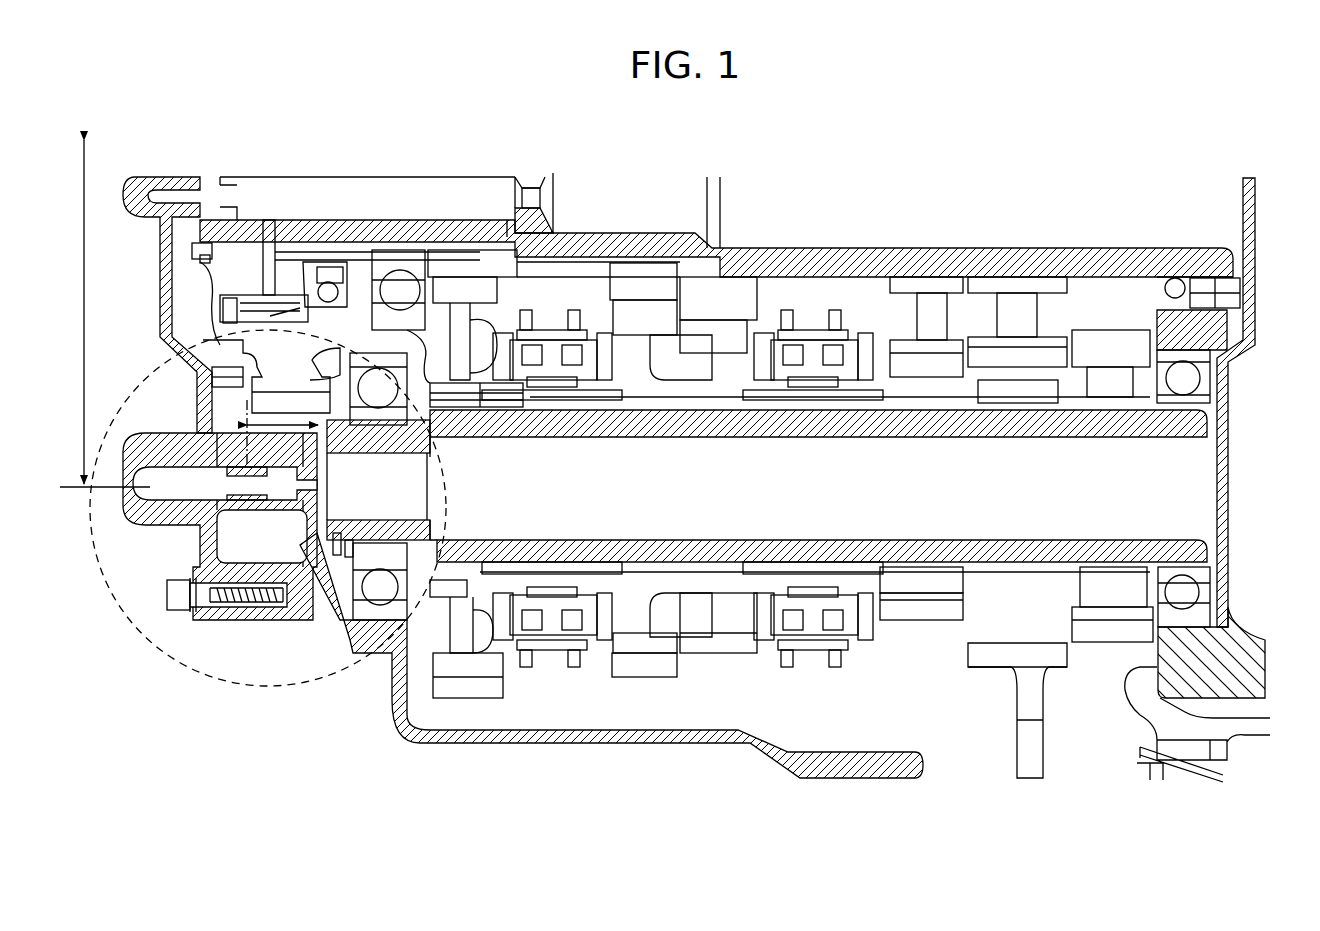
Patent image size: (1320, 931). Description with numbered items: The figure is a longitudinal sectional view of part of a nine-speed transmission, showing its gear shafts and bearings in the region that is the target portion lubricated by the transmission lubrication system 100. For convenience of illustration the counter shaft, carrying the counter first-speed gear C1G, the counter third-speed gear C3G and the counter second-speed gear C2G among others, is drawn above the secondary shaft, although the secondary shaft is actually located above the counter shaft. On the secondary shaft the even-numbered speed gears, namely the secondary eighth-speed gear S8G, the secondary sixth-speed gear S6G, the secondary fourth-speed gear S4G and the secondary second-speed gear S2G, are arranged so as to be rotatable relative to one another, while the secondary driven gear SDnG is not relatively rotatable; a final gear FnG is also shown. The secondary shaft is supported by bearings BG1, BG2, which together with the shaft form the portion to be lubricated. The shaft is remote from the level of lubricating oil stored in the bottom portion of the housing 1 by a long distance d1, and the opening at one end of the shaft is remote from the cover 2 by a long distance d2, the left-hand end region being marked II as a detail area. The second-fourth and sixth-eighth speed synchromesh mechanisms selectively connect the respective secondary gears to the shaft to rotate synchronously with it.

The counter first-speed gear C1G is at (285, 345).
The counter third-speed gear C3G is at (940, 305).
The counter second-speed gear C2G is at (1020, 308).
The secondary eighth-speed gear S8G is at (485, 670).
The secondary sixth-speed gear S6G is at (635, 665).
The secondary fourth-speed gear S4G is at (722, 650).
The secondary second-speed gear S2G is at (908, 600).
The final gear FnG is at (1010, 665).
The secondary driven gear SDnG is at (1103, 625).
The bearing BG1 is at (365, 615).
The bearing BG2 is at (1193, 618).
The housing 1 is at (330, 607).
The cover 2 is at (160, 430).
The transmission lubrication system 100 is at (200, 637).
The section II region II is at (152, 637).
The distance d1 is at (102, 313).
The distance d2 is at (268, 431).